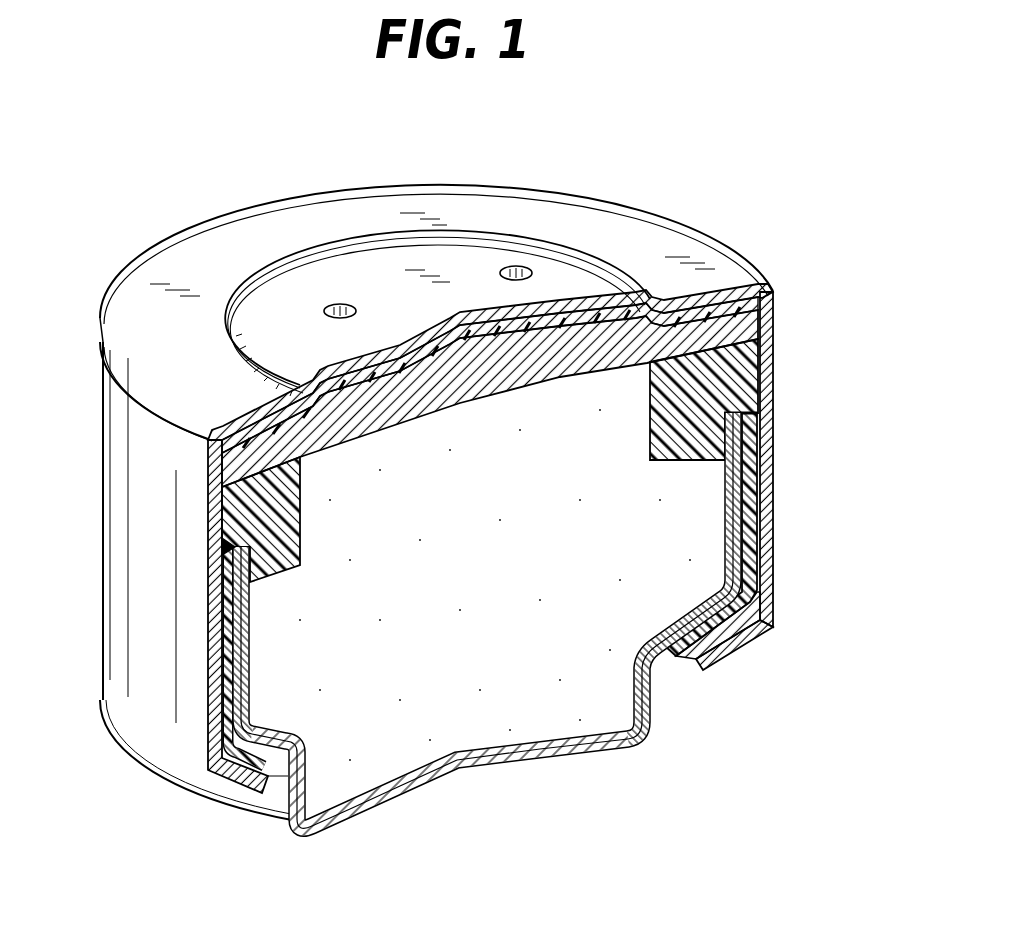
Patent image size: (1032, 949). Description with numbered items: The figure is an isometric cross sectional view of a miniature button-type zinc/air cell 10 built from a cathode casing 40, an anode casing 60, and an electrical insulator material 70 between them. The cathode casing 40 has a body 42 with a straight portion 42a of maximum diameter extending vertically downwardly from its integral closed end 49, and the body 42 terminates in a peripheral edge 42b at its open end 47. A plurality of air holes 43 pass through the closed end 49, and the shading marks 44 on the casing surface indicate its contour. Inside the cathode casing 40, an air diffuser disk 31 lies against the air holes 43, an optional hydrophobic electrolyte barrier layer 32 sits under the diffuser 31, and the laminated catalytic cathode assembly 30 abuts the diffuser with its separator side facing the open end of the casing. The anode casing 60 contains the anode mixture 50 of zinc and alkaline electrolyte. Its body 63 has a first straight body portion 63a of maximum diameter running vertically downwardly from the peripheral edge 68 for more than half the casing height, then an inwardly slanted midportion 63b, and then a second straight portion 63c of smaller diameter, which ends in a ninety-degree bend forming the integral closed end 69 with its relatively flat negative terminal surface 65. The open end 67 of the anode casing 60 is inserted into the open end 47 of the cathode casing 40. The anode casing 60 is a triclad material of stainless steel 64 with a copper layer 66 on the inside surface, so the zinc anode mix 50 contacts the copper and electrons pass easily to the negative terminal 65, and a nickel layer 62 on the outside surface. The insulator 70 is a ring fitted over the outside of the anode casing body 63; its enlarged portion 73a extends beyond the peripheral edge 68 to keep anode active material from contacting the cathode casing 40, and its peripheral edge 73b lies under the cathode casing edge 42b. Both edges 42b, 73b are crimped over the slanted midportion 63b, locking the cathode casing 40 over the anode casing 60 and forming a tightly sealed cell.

The zinc/air cell 10 is at (210, 183).
The catalytic cathode assembly 30 is at (740, 340).
The air diffuser disk 31 is at (783, 289).
The electrolyte barrier layer 32 is at (760, 312).
The cathode casing 40 is at (656, 230).
The body of cathode casing 42 is at (775, 452).
The straight portion of cathode casing body 42a is at (775, 562).
The peripheral edge of cathode casing 42b is at (736, 656).
The air holes 43 is at (341, 303).
The raised center portion of cap 44 is at (468, 252).
The open end of cathode casing 47 is at (262, 792).
The closed end of cathode casing 49 is at (170, 252).
The anode mixture 50 is at (570, 712).
The anode casing 60 is at (652, 740).
The nickel layer 62 is at (553, 768).
The body of anode casing 63 is at (232, 634).
The first straight body portion 63a is at (735, 525).
The slanted midportion 63b is at (668, 664).
The second straight portion 63c is at (657, 702).
The stainless steel 64 is at (500, 765).
The negative terminal surface 65 is at (425, 795).
The copper layer 66 is at (345, 812).
The open end of anode casing 67 is at (227, 540).
The peripheral edge of anode casing 68 is at (746, 425).
The closed end of anode casing 69 is at (380, 812).
The electrical insulator material 70 is at (752, 485).
The enlarged portion of insulator ring 73a is at (722, 371).
The peripheral edge of insulator ring 73b is at (740, 630).